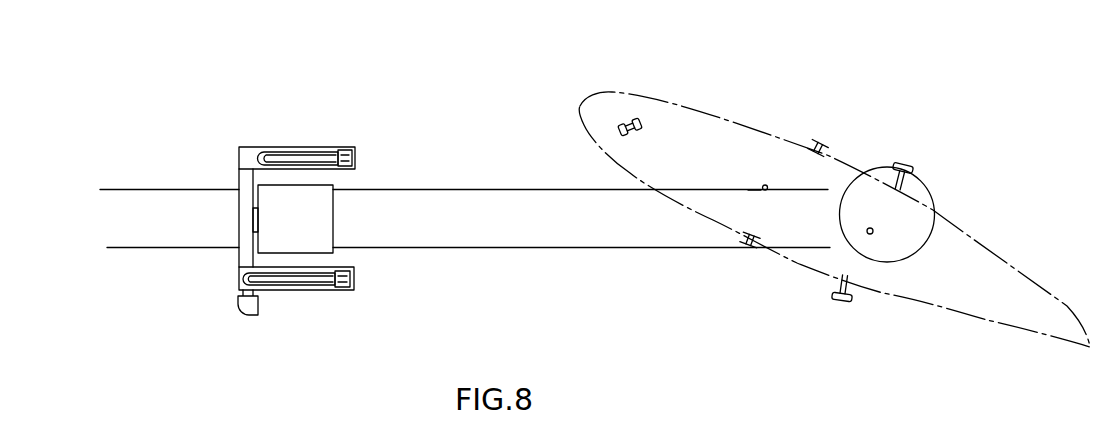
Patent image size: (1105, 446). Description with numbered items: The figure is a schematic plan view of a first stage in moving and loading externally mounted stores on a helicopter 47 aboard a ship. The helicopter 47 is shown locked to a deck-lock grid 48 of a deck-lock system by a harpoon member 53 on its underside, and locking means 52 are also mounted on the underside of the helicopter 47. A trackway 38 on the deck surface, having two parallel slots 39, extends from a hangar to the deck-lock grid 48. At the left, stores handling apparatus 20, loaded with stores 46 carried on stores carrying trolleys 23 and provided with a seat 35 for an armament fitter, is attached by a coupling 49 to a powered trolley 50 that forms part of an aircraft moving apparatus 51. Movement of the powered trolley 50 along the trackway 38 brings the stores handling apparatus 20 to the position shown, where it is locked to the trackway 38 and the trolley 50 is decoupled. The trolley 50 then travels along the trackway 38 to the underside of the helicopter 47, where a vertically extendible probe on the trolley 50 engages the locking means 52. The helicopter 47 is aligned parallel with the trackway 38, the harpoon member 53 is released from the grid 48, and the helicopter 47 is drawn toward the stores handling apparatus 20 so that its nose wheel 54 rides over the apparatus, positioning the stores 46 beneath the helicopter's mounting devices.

The stores handling apparatus 20 is at (298, 303).
The stores carrying trolley 23 is at (302, 147).
The seat 35 is at (238, 310).
The trackway 38 is at (500, 234).
The slot 39 is at (508, 188).
The stores 46 is at (323, 157).
The helicopter 47 is at (943, 307).
The deck-lock grid 48 is at (928, 190).
The coupling 49 is at (254, 221).
The powered trolley 50 is at (305, 232).
The aircraft moving apparatus 51 is at (338, 222).
The locking means 52 is at (764, 184).
The harpoon member 53 is at (867, 233).
The nose wheel 54 is at (631, 118).